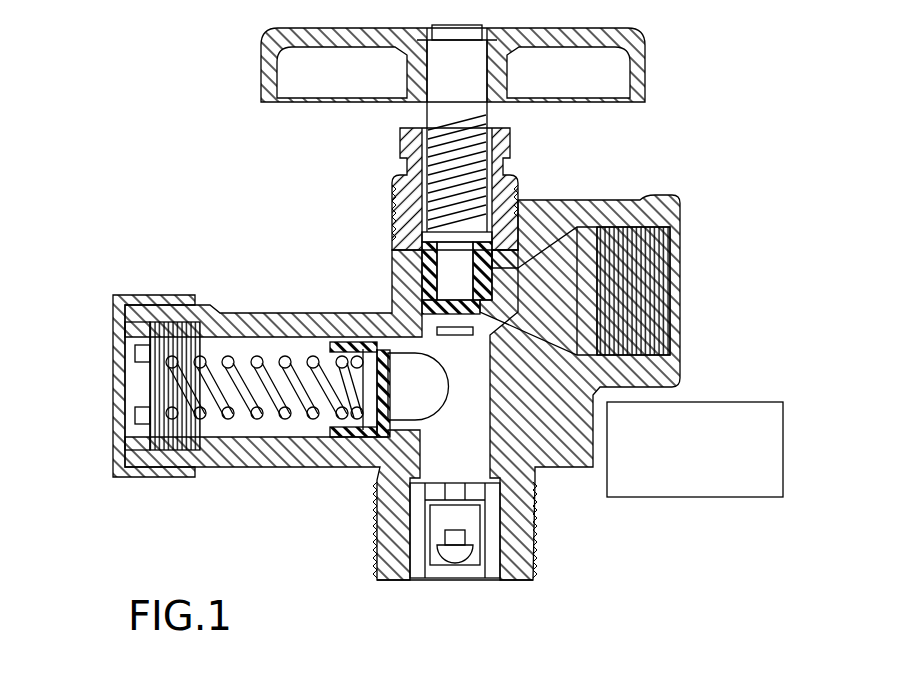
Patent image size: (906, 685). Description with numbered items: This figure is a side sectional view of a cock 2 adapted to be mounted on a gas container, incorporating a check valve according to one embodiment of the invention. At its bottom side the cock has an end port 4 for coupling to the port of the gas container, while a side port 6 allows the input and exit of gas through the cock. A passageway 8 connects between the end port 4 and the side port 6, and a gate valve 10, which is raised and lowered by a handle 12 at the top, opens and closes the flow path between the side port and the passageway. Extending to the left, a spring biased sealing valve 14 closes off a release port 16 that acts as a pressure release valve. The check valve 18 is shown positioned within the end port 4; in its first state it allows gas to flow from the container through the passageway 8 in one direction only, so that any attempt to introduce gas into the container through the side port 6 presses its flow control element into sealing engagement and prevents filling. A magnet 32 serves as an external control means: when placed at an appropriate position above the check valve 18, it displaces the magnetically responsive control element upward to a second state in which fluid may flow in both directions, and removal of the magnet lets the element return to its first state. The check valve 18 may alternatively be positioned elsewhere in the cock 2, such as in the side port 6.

The cock 2 is at (170, 148).
The end port 4 is at (427, 580).
The side port 6 is at (653, 295).
The passageway 8 is at (418, 423).
The gate valve 10 is at (455, 268).
The handle 12 is at (610, 75).
The spring biased sealing valve 14 is at (445, 433).
The release port 16 is at (137, 382).
The check valve 18 is at (487, 533).
The magnet 32 is at (735, 413).